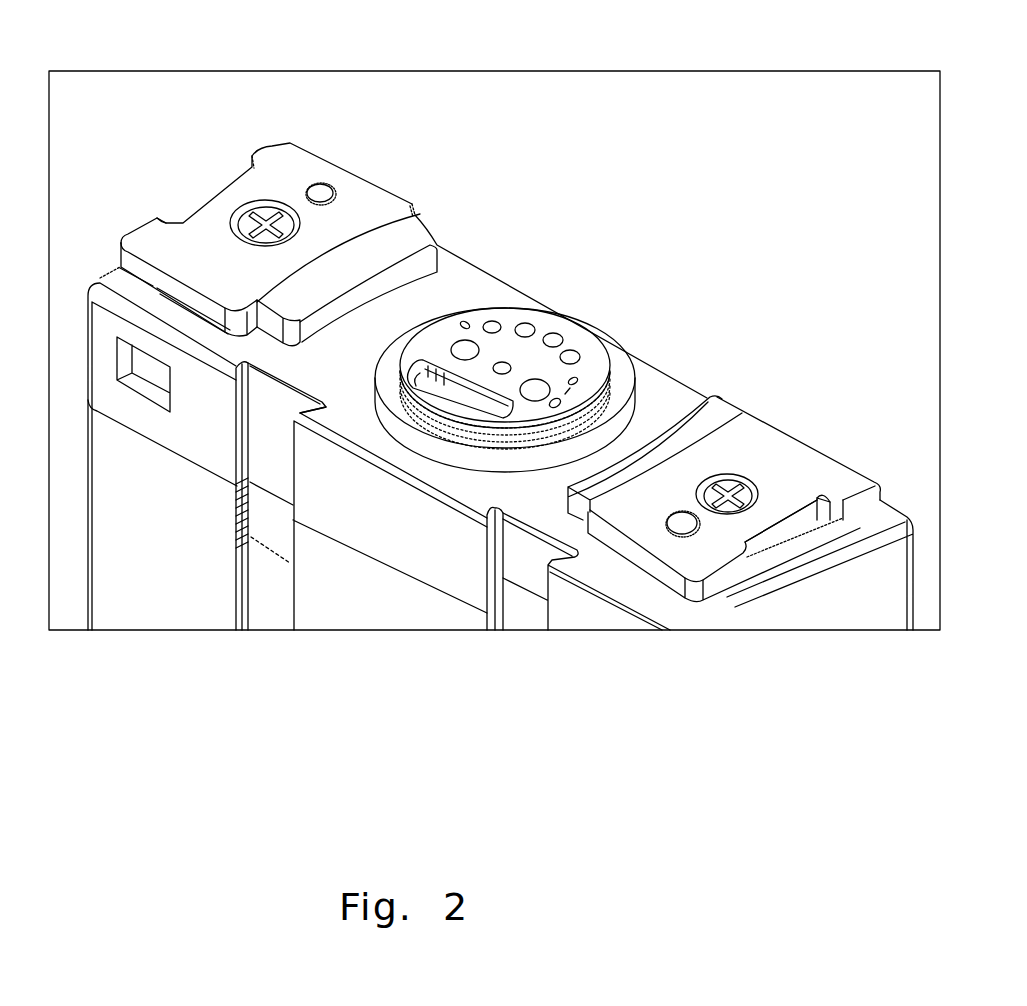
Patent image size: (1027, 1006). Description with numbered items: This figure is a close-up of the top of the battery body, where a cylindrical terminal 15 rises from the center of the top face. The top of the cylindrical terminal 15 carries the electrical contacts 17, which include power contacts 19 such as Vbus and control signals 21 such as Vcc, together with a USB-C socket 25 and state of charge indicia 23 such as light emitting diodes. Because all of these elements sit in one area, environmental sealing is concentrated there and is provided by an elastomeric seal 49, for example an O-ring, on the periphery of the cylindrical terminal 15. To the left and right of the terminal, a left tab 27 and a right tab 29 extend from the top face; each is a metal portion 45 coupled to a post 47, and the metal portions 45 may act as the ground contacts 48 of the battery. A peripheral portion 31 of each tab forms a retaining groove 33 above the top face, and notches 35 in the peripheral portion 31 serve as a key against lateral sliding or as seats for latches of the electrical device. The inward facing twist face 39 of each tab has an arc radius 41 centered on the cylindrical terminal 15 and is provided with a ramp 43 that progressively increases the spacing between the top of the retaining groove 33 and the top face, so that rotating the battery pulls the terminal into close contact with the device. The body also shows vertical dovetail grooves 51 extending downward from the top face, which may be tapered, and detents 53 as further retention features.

The cylindrical terminal 15 is at (508, 464).
The electrical contacts 17 is at (470, 464).
The power contacts 19 is at (463, 352).
The control signals 21 is at (502, 368).
The state of charge indicia 23 is at (553, 340).
The USB-C socket 25 is at (465, 398).
The left tab 27 is at (410, 367).
The right tab 29 is at (787, 455).
The peripheral portion 31 is at (413, 205).
The retaining groove 33 is at (618, 557).
The notches 35 is at (225, 200).
The twist face 39 is at (434, 414).
The arc radius 41 is at (296, 410).
The ramp 43 is at (350, 254).
The metal portion 45 is at (530, 367).
The post 47 is at (785, 550).
The ground contacts 48 is at (345, 182).
The elastomeric seal 49 is at (597, 433).
The vertical dovetail grooves 51 is at (268, 408).
The detents 53 is at (150, 366).